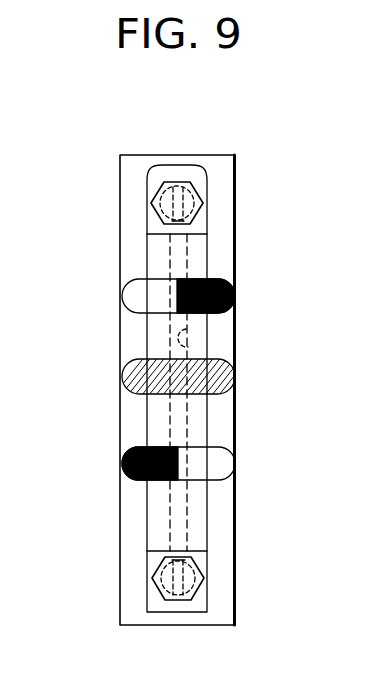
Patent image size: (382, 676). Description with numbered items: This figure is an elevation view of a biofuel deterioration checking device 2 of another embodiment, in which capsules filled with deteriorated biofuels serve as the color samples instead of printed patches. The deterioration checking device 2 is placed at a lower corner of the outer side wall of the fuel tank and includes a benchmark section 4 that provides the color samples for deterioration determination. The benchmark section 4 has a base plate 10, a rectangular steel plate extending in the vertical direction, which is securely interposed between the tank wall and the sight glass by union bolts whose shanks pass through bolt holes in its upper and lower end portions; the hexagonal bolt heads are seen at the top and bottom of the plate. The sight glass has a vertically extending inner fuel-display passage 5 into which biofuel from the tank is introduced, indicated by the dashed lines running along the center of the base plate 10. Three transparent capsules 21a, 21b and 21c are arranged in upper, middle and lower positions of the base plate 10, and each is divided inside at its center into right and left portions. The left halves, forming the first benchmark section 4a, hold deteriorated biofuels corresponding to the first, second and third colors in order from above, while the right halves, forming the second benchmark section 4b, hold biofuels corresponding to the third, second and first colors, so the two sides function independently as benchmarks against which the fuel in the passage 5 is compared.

The biofuel deterioration checking device 2 is at (245, 156).
The benchmark section 4 is at (237, 199).
The first benchmark section 4a is at (99, 278).
The second benchmark section 4b is at (255, 277).
The fuel-display passage 5 is at (188, 347).
The base plate 10 is at (127, 167).
The transparent capsule 21a is at (122, 296).
The transparent capsule 21b is at (122, 376).
The transparent capsule 21c is at (236, 298).